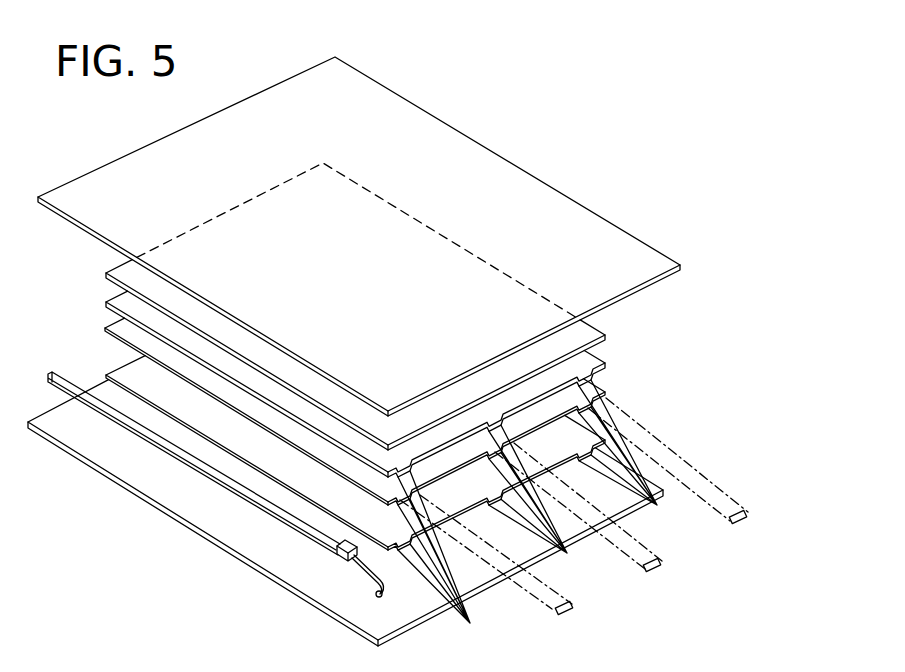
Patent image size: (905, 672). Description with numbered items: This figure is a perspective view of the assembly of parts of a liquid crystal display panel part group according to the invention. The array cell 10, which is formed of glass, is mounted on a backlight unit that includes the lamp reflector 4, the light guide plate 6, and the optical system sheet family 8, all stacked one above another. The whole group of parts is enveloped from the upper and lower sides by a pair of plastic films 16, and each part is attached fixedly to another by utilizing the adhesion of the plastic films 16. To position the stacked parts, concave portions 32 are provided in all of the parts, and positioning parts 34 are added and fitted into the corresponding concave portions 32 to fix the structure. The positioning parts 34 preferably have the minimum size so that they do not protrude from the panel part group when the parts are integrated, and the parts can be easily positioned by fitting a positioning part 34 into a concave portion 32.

The plastic film 16 is at (570, 220).
The array cell 10 is at (575, 327).
The optical system sheet family 8 is at (580, 363).
The light guide plate 6 is at (615, 383).
The lamp reflector 4 is at (133, 375).
The concave portion 32 is at (573, 518).
The positioning part 34 is at (658, 566).